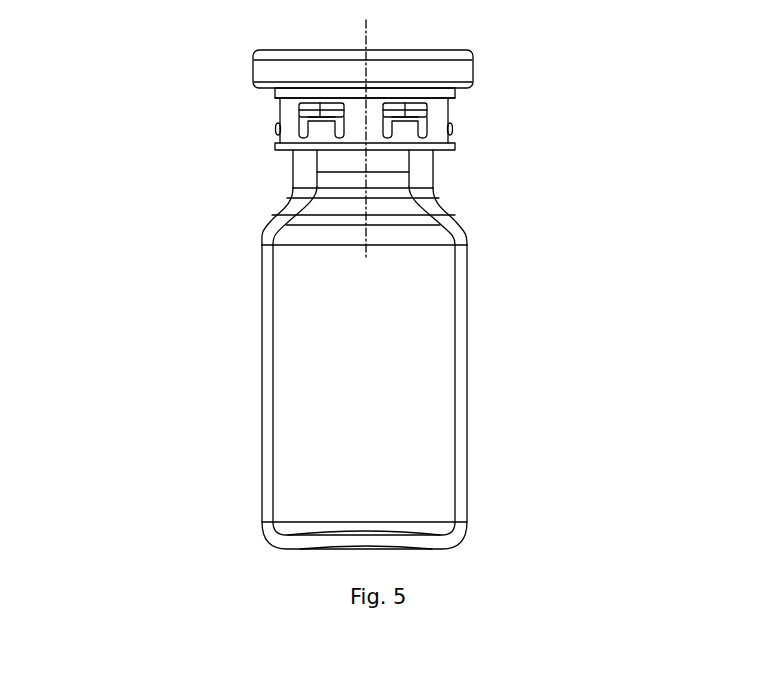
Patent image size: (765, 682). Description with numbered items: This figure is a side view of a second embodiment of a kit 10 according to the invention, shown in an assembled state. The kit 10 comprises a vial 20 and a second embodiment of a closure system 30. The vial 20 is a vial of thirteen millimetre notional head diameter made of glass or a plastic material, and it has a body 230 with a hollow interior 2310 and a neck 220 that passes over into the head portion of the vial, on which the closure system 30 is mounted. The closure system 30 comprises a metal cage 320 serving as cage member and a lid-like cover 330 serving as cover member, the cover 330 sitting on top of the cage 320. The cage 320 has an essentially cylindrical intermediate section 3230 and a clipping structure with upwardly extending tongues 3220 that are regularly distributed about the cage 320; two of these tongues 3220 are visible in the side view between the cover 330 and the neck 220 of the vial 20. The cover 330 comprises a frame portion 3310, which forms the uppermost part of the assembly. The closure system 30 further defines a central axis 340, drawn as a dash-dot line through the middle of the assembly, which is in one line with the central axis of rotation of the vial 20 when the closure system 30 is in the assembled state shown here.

The kit 10 is at (223, 428).
The vial 20 is at (243, 342).
The closure system 30 is at (507, 108).
The neck 220 is at (423, 164).
The body 230 is at (460, 366).
The hollow interior 2310 is at (418, 464).
The metal cage 320 is at (263, 143).
The cover 330 is at (488, 73).
The central axis 340 is at (366, 20).
The tongues 3220 is at (407, 127).
The intermediate section 3230 is at (280, 93).
The frame portion 3310 is at (268, 65).